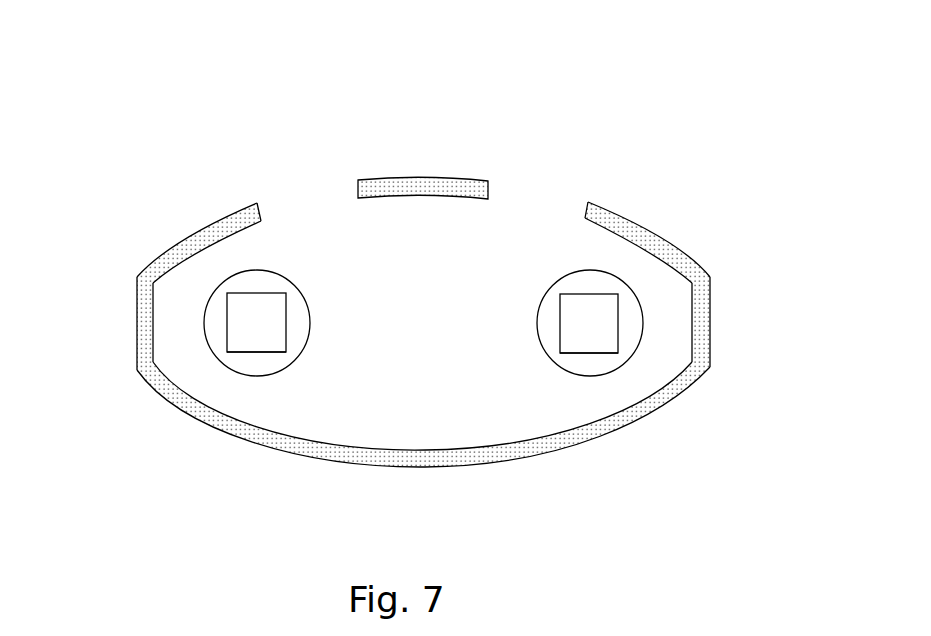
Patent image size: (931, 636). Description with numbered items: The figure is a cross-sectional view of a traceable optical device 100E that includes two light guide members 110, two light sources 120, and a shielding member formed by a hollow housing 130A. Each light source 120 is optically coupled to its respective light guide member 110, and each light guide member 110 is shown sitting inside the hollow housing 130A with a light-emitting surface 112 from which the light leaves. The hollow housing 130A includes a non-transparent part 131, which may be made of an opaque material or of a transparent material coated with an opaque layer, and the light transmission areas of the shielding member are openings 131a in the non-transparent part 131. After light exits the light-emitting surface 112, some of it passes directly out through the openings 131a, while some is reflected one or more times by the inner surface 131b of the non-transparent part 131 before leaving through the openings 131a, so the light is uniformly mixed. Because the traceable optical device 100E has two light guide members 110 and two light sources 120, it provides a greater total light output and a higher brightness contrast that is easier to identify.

The traceable optical device 100E is at (83, 33).
The hollow housing 130A is at (374, 268).
The non-transparent part 131 is at (192, 240).
The openings 131a is at (282, 203).
The inner surface 131b is at (153, 302).
The light-emitting surface 112 is at (217, 359).
The light guide member 110 is at (247, 363).
The light source 120 is at (272, 342).